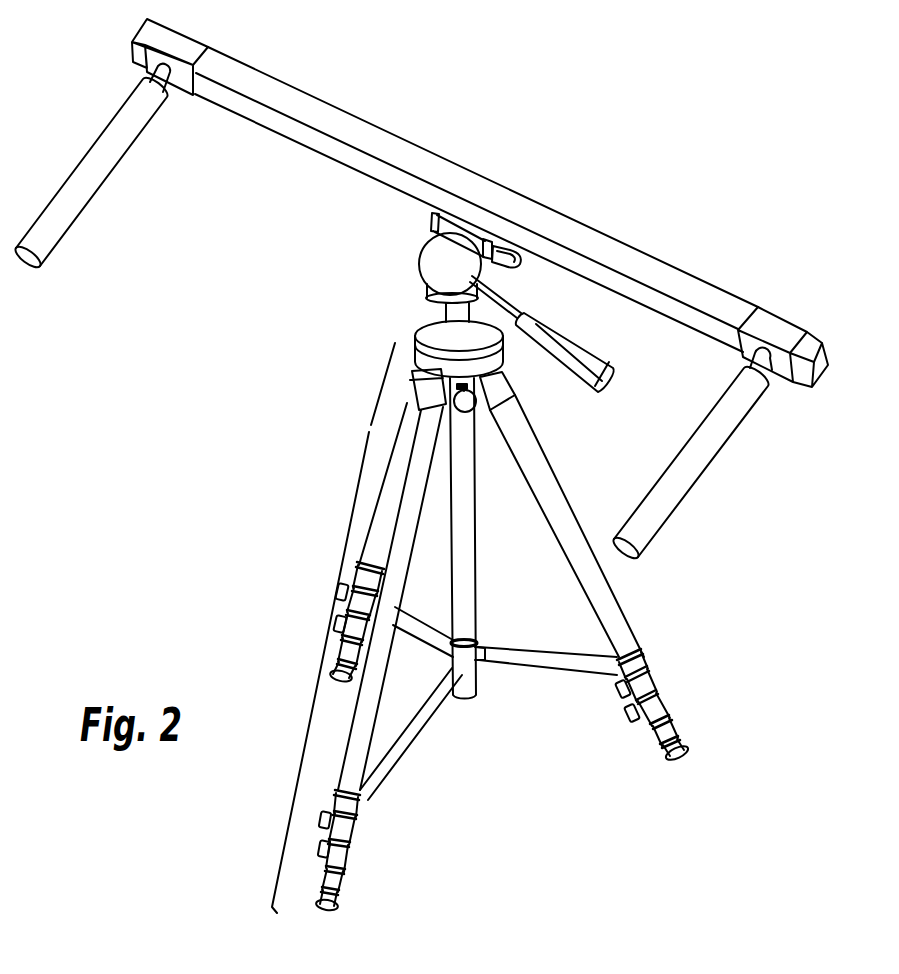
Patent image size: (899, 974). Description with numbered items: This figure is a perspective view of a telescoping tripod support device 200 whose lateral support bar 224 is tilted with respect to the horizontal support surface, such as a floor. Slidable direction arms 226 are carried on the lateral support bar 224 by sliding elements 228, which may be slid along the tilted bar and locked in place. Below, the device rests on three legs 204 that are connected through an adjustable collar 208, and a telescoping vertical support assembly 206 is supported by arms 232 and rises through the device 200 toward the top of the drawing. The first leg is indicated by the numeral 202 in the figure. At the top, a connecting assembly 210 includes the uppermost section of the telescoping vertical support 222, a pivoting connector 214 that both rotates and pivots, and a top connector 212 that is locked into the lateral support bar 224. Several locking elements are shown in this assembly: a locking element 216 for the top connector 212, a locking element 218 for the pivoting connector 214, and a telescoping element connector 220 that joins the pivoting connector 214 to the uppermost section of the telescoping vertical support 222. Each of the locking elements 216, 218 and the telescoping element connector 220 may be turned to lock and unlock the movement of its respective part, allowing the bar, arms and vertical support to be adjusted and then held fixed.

The telescoping tripod support device 200 is at (312, 466).
The first leg 202 is at (371, 425).
The legs 204 is at (607, 587).
The telescoping vertical support assembly 206 is at (474, 557).
The adjustable collar 208 is at (480, 655).
The connecting assembly 210 is at (282, 209).
The top connector 212 is at (432, 216).
The pivoting connector 214 is at (413, 327).
The locking element 216 is at (527, 272).
The locking element 218 is at (577, 392).
The telescoping element connector 220 is at (471, 412).
The uppermost section of the telescoping vertical support 222 is at (392, 331).
The lateral support bar 224 is at (628, 247).
The slidable direction arms 226 is at (693, 485).
The sliding elements 228 is at (765, 318).
The arms 232 is at (427, 625).